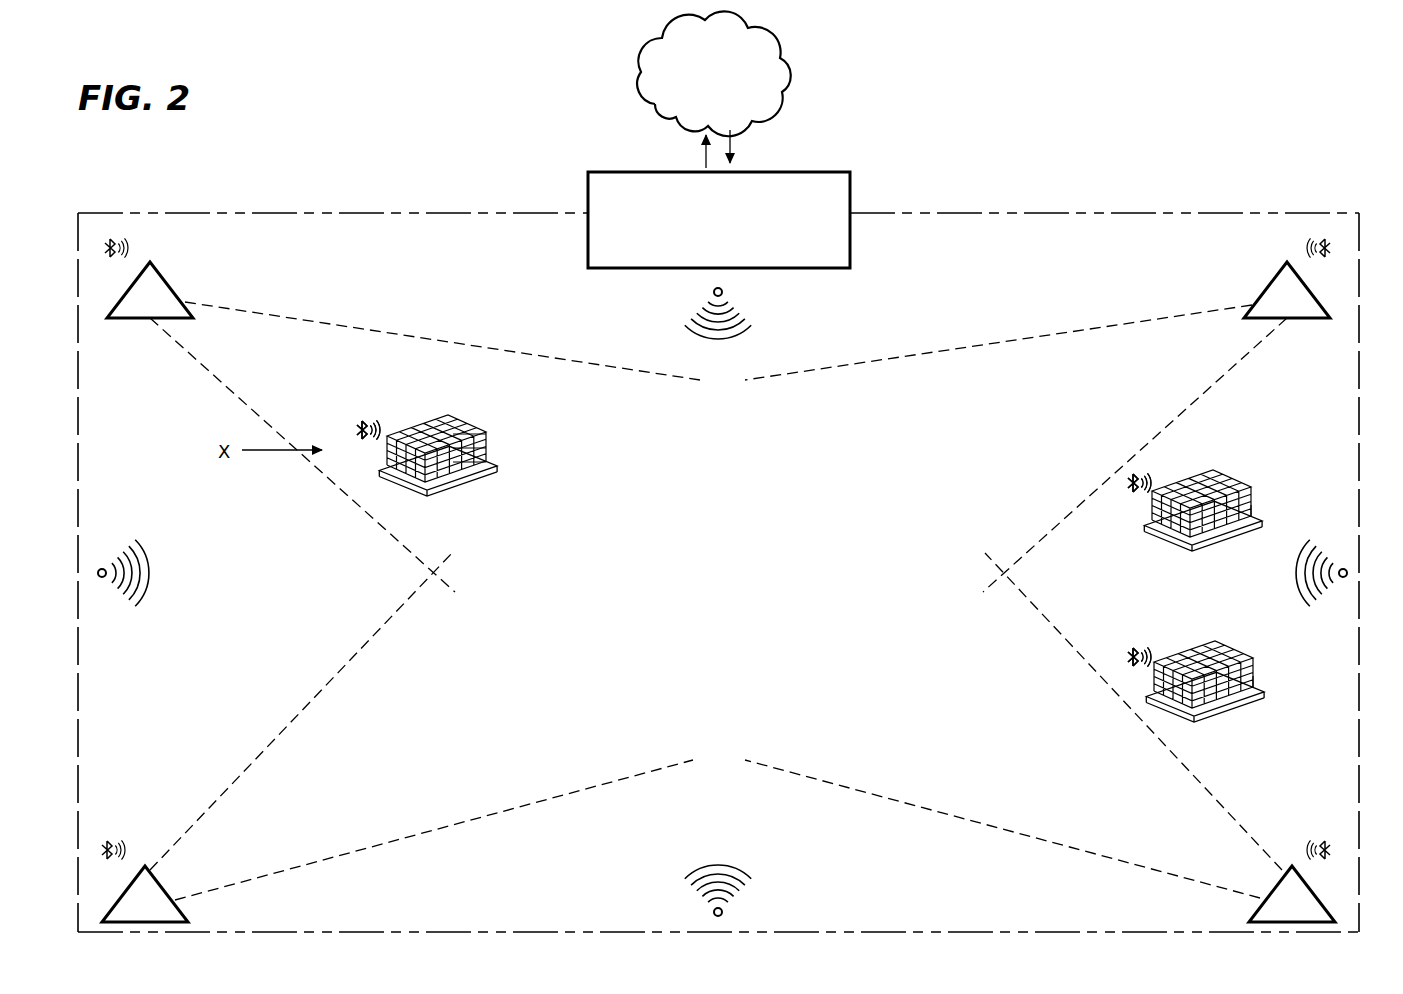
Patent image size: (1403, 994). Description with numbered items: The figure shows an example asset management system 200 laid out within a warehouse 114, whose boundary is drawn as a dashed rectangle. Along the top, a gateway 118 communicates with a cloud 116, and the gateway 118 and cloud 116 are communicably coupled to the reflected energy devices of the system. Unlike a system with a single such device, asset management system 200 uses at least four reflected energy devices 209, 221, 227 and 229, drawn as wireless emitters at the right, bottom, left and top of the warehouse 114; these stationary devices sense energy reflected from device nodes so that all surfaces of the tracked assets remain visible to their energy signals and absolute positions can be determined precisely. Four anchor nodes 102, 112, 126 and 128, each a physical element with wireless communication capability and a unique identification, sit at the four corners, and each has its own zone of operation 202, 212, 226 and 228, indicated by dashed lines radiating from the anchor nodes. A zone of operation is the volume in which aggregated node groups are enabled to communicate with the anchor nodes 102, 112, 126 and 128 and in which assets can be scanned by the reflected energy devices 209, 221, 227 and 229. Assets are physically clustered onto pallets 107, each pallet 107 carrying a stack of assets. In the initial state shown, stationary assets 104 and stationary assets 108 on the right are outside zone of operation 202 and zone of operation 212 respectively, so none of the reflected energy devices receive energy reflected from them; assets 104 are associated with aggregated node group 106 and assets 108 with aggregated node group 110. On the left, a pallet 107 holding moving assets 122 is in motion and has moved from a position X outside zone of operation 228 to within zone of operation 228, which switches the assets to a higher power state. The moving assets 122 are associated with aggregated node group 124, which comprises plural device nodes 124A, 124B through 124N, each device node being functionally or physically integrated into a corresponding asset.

The asset management system 200 is at (1208, 166).
The warehouse 114 is at (836, 910).
The cloud 116 is at (783, 72).
The gateway 118 is at (818, 172).
The reflected energy device 229 is at (723, 292).
The reflected energy device 227 is at (102, 578).
The reflected energy device 221 is at (712, 912).
The reflected energy device 209 is at (1336, 545).
The anchor node 128 is at (182, 297).
The anchor node 102 is at (1258, 300).
The anchor node 126 is at (185, 910).
The anchor node 112 is at (1258, 903).
The zone of operation 228 is at (345, 409).
The zone of operation 202 is at (1111, 409).
The zone of operation 226 is at (350, 794).
The zone of operation 212 is at (1121, 794).
The assets 122 is at (485, 403).
The aggregated node group 124 is at (558, 461).
The device node 124A is at (483, 436).
The device node 124B is at (484, 455).
The device node 124N is at (486, 474).
The pallet 107 is at (480, 462).
The assets 104 is at (1224, 470).
The aggregated node group 106 is at (1262, 492).
The assets 108 is at (1247, 657).
The aggregated node group 110 is at (1263, 684).